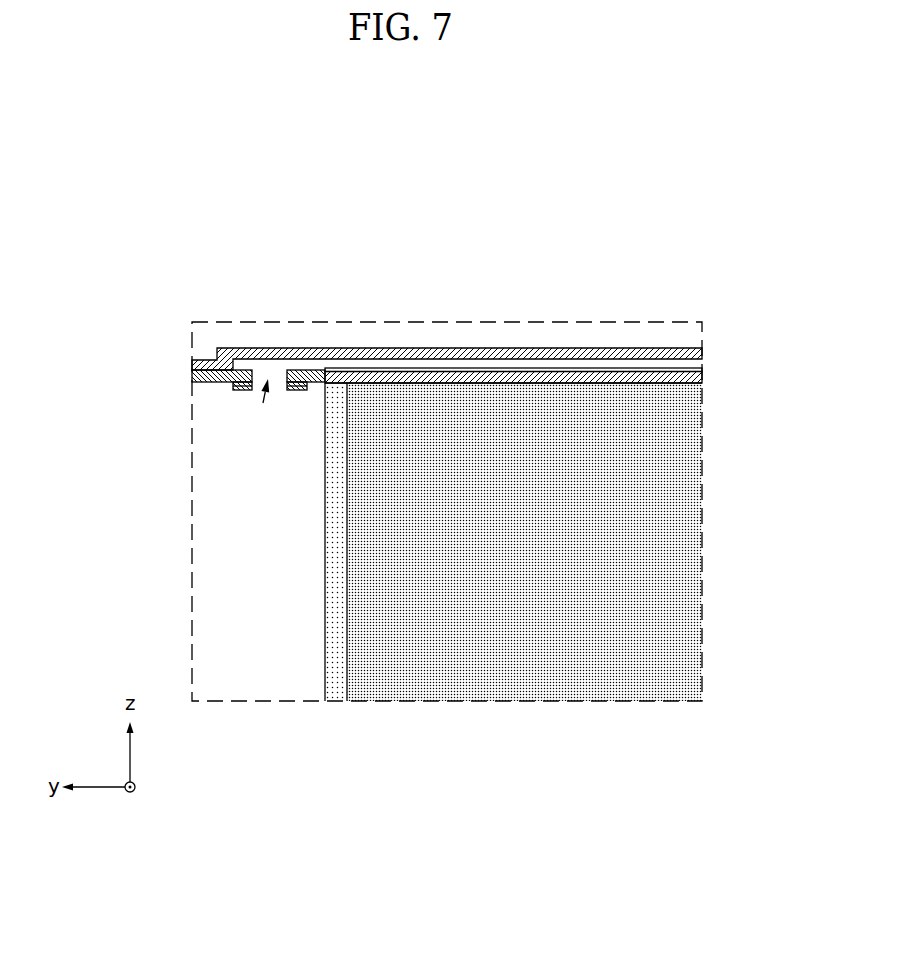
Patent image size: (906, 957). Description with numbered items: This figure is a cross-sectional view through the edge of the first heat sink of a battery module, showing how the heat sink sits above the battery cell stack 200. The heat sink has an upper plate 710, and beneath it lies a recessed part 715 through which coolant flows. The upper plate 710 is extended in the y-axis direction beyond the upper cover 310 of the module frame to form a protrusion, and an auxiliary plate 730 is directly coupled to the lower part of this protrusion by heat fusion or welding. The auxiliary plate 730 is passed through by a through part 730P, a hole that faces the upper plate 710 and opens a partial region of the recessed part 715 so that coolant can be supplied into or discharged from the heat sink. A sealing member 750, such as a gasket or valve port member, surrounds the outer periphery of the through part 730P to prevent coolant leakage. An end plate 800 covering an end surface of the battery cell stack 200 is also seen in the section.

The upper plate 710 is at (355, 349).
The recessed part 715 is at (487, 368).
The upper cover 310 is at (698, 378).
The battery cell stack 200 is at (686, 472).
The end plate 800 is at (337, 688).
The auxiliary plate 730 is at (295, 370).
The sealing member 750 is at (243, 392).
The through part 730P is at (263, 406).